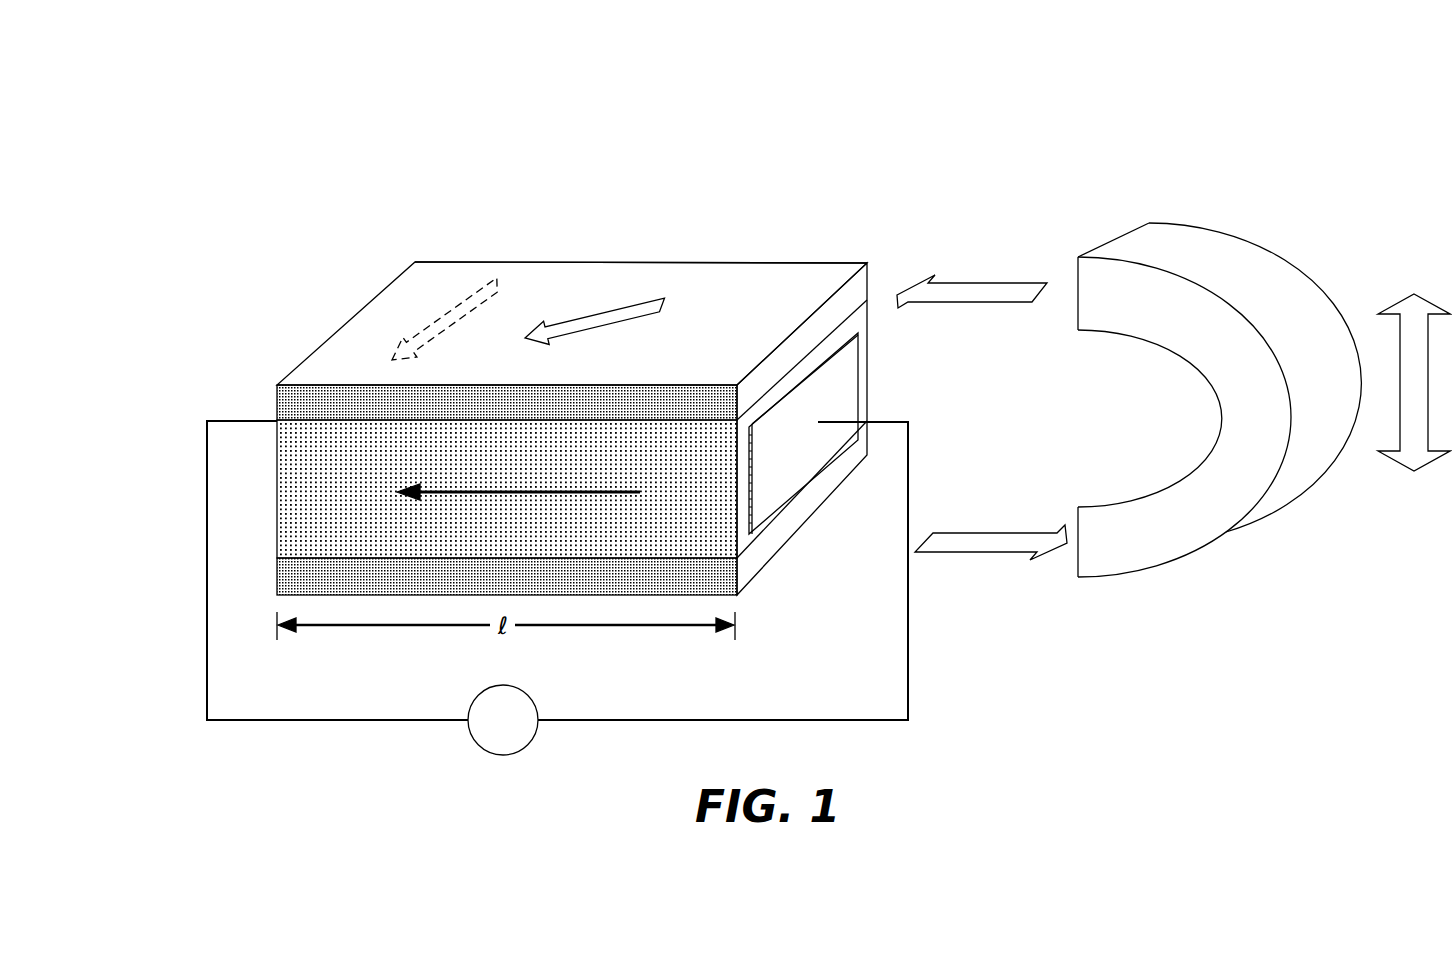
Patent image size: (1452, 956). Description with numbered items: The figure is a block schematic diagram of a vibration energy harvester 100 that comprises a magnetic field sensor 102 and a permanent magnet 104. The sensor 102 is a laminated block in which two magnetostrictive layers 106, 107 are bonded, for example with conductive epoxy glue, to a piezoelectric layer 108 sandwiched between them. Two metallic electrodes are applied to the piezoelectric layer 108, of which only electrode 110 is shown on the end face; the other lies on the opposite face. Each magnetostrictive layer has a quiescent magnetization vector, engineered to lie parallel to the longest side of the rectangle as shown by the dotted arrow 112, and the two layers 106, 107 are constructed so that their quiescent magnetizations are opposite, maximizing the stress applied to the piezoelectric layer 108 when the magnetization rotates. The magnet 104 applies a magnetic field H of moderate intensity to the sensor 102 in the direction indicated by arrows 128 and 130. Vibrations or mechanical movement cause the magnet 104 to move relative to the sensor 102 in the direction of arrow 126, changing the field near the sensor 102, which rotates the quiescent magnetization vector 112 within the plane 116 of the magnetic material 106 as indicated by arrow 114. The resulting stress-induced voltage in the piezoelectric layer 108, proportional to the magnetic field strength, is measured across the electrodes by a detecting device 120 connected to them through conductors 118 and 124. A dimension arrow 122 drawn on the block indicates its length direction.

The vibration energy harvester 100 is at (1084, 658).
The magnetic field sensor 102 is at (301, 304).
The permanent magnet 104 is at (1166, 256).
The magnetostrictive layer 106 is at (305, 402).
The magnetostrictive layer 107 is at (277, 577).
The piezoelectric layer 108 is at (305, 492).
The electrode 110 is at (780, 493).
The quiescent magnetization vector 112 is at (478, 287).
The magnetization rotation arrow 114 is at (596, 325).
The plane of the magnetic material 116 is at (727, 278).
The conductor 118 is at (205, 598).
The detecting device 120 is at (515, 737).
The longitudinal axis arrow 122 is at (595, 493).
The conductor 124 is at (622, 721).
The direction of magnet motion arrow 126 is at (1412, 455).
The magnetic field direction arrow 128 is at (973, 290).
The magnetic field direction arrow 130 is at (973, 541).